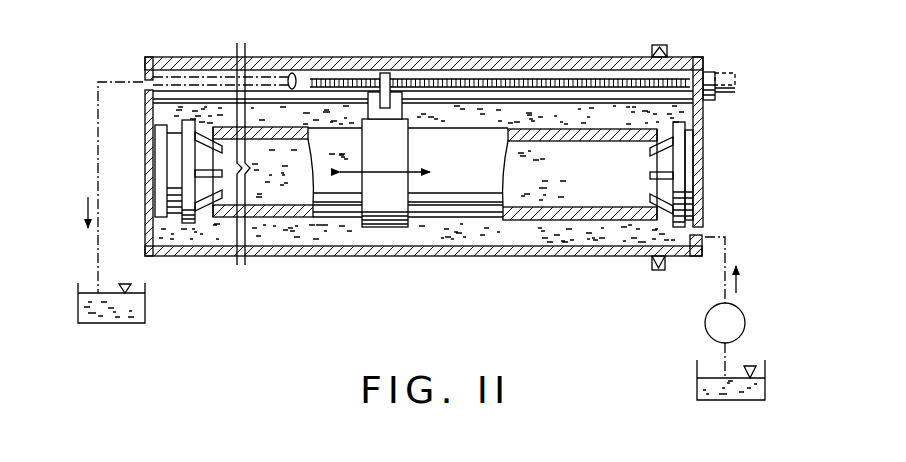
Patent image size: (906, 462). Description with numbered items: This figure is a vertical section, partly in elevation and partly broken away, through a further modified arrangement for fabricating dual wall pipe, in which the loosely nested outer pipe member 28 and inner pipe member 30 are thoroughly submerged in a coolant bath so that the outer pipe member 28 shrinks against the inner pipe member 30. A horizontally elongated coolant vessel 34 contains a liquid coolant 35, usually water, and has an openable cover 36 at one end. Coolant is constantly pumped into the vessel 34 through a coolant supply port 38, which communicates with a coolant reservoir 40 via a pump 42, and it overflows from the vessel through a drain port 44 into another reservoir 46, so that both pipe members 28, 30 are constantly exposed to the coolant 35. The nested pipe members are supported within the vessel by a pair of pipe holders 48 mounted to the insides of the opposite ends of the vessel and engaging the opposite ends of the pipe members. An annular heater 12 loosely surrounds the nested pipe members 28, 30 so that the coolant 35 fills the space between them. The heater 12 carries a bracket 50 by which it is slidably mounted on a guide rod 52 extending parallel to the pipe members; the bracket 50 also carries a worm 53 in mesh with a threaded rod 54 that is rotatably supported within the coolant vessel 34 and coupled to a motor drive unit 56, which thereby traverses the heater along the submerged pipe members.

The annular heater 12 is at (388, 228).
The outer pipe member 28 is at (263, 127).
The inner pipe member 30 is at (278, 218).
The coolant vessel 34 is at (497, 57).
The liquid coolant 35 is at (608, 176).
The openable cover 36 is at (704, 157).
The coolant supply port 38 is at (710, 238).
The coolant reservoir 40 is at (727, 402).
The pump 42 is at (705, 323).
The drain port 44 is at (145, 70).
The reservoir 46 is at (109, 325).
The pipe holders 48 is at (187, 219).
The bracket 50 is at (408, 110).
The guide rod 52 is at (548, 100).
The worm 53 is at (384, 73).
The threaded rod 54 is at (435, 78).
The motor drive unit 56 is at (722, 72).